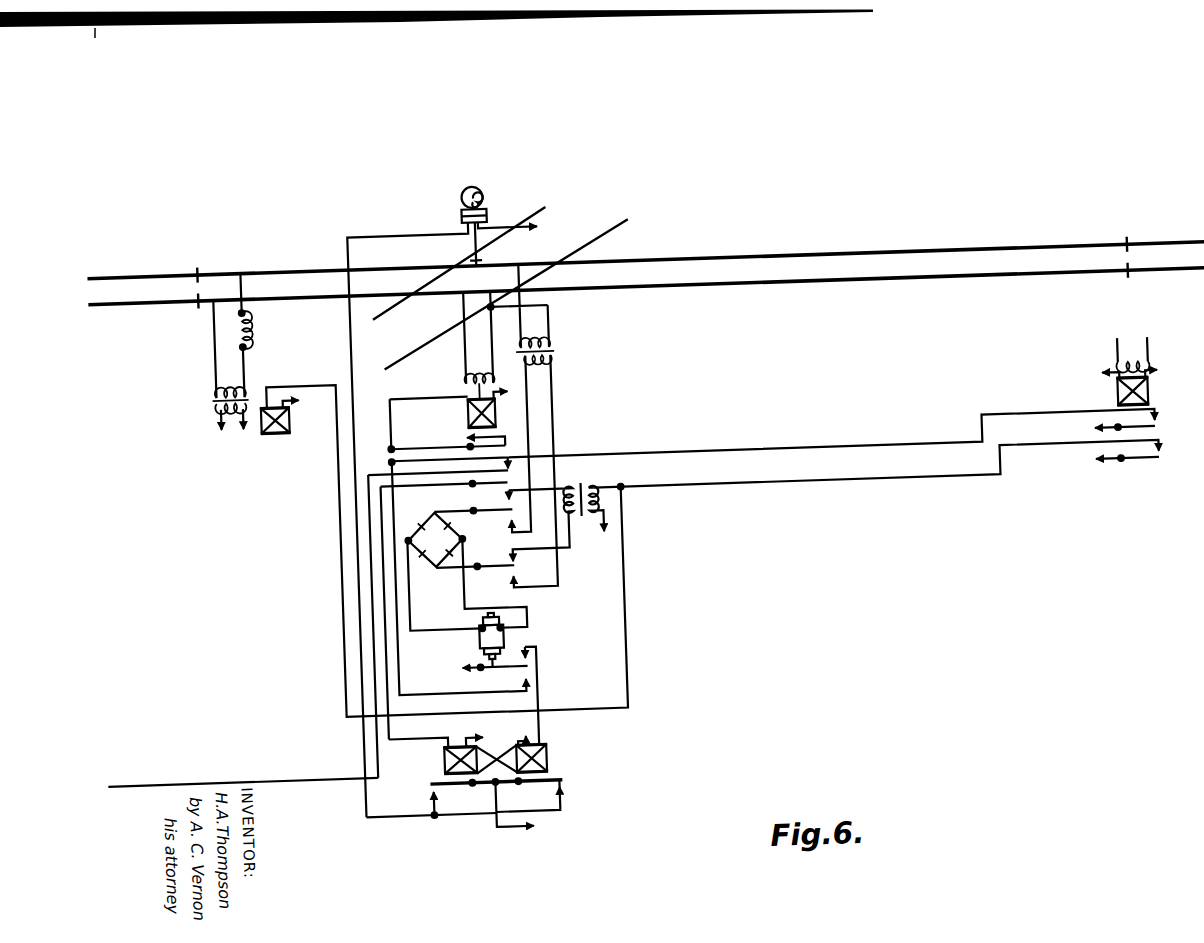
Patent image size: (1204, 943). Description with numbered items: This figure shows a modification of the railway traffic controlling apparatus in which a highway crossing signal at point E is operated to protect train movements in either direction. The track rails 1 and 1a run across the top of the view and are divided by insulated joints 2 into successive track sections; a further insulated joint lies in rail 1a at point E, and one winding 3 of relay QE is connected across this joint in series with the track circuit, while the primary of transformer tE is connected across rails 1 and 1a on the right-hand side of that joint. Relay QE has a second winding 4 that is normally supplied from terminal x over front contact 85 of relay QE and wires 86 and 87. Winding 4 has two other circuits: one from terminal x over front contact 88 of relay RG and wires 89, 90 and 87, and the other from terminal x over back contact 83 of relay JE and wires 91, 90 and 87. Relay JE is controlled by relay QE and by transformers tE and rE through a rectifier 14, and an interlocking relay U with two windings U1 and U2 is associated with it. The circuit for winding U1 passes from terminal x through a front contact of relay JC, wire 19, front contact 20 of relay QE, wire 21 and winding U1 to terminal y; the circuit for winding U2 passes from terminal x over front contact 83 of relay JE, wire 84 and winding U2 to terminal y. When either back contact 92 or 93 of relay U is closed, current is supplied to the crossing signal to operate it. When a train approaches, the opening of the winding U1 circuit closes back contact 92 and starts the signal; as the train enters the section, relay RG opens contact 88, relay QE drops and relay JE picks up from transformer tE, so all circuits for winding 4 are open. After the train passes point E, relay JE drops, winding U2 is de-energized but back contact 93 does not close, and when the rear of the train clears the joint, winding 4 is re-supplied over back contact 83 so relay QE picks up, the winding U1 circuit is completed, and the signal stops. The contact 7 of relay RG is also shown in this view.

The track rail 1 is at (751, 255).
The track rail 1a is at (723, 301).
The insulated joints 2 is at (1137, 290).
The winding of relay Q 3 is at (479, 379).
The winding of relay Q 4 is at (498, 419).
The contact 7 is at (1144, 485).
The rectifier 14 is at (416, 526).
The wire 19 is at (139, 777).
The front contact of relay QE 20 is at (488, 498).
The wire 21 is at (417, 740).
The contact of relay JE 83 is at (498, 677).
The wire 84 is at (535, 655).
The front contact of relay QE 85 is at (508, 450).
The wire 86 is at (447, 437).
The wire 87 is at (418, 399).
The front contact of relay RG 88 is at (1158, 451).
The wire 89 is at (913, 461).
The wire 90 is at (382, 462).
The wire 91 is at (395, 669).
The back contact of relay U 92 is at (424, 787).
The back contact of relay U 93 is at (528, 798).